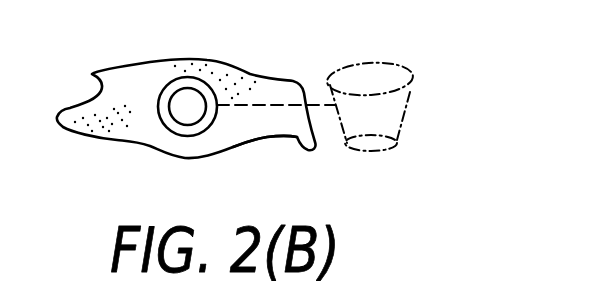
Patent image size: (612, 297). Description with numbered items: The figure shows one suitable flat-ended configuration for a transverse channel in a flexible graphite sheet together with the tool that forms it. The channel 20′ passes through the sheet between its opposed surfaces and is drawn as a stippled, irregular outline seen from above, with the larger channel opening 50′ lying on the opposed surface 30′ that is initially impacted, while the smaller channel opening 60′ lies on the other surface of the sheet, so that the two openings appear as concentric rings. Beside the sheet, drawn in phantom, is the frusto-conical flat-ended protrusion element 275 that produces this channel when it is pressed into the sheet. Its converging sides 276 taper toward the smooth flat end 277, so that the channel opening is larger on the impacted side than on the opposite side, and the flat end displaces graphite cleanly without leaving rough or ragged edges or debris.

The channel 20′ is at (155, 78).
The channel opening 60′ is at (188, 100).
The channel opening 50′ is at (160, 116).
The opposed surface 30′ is at (240, 130).
The flat-ended protrusion element 275 is at (363, 62).
The converging sides 276 is at (400, 128).
The smooth flat end 277 is at (380, 147).